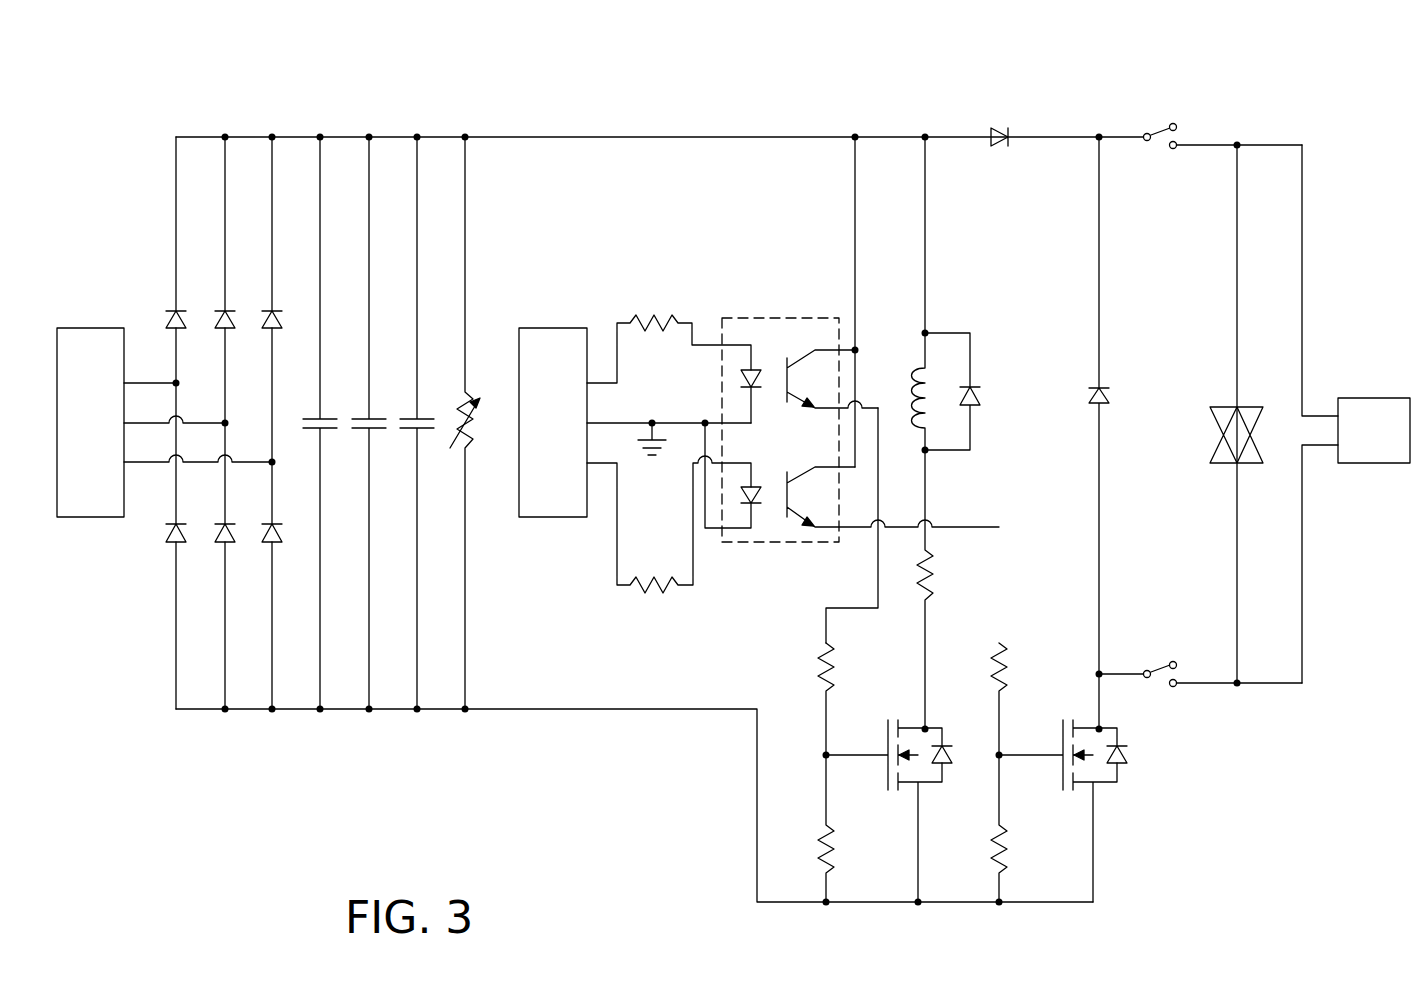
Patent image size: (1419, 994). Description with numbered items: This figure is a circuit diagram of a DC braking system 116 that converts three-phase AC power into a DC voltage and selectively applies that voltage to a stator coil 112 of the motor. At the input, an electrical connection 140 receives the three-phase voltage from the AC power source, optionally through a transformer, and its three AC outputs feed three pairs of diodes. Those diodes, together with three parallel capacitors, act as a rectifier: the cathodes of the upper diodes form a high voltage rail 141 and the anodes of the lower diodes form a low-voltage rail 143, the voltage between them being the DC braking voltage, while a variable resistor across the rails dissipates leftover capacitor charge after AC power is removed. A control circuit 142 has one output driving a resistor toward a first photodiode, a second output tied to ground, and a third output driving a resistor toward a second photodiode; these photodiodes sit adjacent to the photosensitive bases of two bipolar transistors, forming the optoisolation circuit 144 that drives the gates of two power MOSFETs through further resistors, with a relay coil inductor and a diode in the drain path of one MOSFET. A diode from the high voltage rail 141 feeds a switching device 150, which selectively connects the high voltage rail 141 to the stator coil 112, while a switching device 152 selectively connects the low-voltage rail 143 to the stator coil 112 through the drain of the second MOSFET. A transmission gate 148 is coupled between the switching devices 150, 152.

The DC braking system 116 is at (648, 72).
The electrical connection 140 is at (95, 328).
The high voltage rail 141 is at (590, 136).
The control circuit 142 is at (557, 328).
The low-voltage rail 143 is at (598, 710).
The driver circuit 144 is at (765, 318).
The transmission gate 148 is at (1228, 407).
The switching device 150 is at (1165, 125).
The switching device 152 is at (1158, 680).
The stator coil 112 is at (1375, 398).